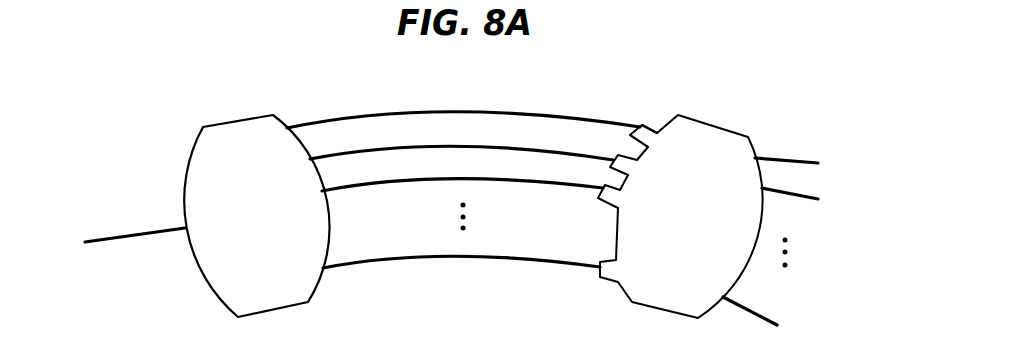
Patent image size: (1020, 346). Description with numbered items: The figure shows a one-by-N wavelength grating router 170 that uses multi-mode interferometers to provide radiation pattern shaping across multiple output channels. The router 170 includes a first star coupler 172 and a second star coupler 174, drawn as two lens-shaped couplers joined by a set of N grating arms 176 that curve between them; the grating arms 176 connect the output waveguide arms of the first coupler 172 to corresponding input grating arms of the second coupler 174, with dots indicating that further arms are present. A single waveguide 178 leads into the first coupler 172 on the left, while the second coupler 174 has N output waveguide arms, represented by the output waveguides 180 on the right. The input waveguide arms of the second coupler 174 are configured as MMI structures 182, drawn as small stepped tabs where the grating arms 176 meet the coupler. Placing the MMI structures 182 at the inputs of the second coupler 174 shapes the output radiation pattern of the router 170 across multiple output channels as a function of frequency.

The wavelength grating router 170 is at (216, 68).
The first star coupler 172 is at (192, 147).
The second star coupler 174 is at (705, 122).
The grating arms 176 is at (458, 110).
The lead line 178 is at (138, 228).
The lead lines 180 is at (787, 158).
The MMI structures 182 is at (655, 130).